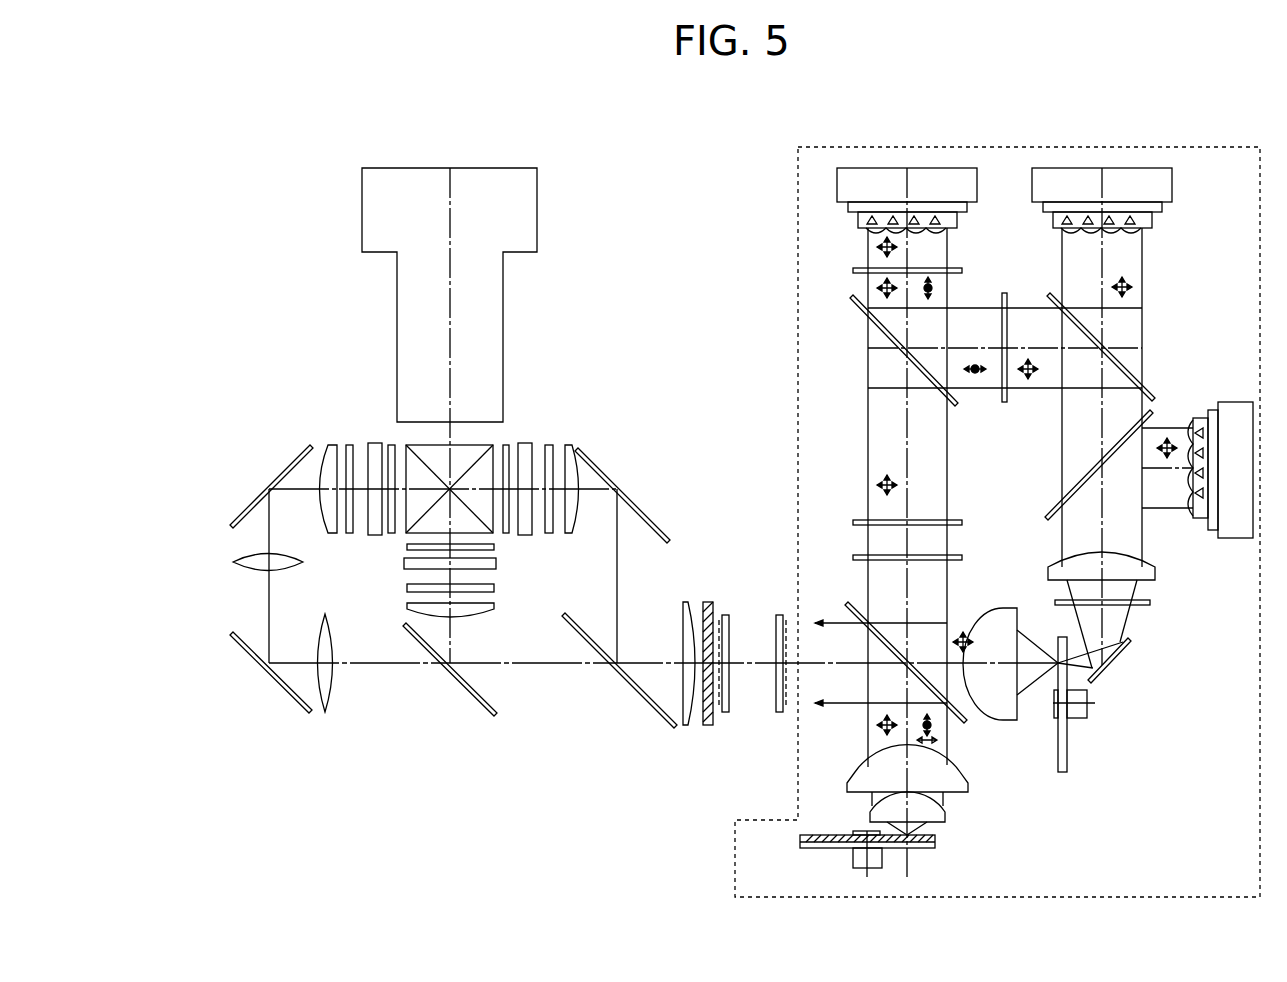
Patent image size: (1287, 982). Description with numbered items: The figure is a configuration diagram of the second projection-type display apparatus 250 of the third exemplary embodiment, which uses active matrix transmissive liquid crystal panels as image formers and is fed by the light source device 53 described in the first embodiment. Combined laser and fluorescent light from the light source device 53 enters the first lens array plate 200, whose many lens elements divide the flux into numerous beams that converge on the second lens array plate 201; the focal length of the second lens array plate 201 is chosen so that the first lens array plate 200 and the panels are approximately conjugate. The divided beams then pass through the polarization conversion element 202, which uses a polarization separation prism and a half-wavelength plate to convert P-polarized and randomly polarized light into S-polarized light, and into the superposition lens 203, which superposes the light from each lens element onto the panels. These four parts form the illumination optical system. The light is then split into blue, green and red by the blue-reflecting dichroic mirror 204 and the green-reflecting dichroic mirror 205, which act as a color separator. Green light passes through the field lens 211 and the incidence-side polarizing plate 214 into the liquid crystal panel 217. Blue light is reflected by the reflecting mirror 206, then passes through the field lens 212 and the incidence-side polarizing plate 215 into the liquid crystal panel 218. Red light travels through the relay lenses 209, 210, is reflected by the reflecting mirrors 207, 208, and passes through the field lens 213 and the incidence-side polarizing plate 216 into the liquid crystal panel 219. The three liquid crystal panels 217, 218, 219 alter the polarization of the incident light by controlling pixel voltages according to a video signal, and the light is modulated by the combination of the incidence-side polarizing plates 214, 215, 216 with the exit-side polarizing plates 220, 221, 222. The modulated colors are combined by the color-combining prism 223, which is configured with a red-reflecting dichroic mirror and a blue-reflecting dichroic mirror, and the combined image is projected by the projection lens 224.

The second projection-type display apparatus 250 is at (610, 135).
The light source device 53 is at (797, 348).
The projection lens 224 is at (362, 225).
The color-combining prism 223 is at (492, 445).
The exit-side polarizing plate 222 is at (392, 445).
The exit-side polarizing plate 221 is at (505, 535).
The exit-side polarizing plate 220 is at (405, 547).
The liquid crystal panel 219 is at (370, 445).
The liquid crystal panel 218 is at (522, 445).
The liquid crystal panel 217 is at (403, 563).
The incidence-side polarizing plate 216 is at (348, 445).
The incidence-side polarizing plate 215 is at (550, 445).
The incidence-side polarizing plate 214 is at (493, 588).
The field lens 213 is at (328, 445).
The field lens 212 is at (567, 533).
The field lens 211 is at (495, 608).
The relay lens 210 is at (237, 563).
The relay lens 209 is at (323, 713).
The reflecting mirror 208 is at (243, 510).
The reflecting mirror 207 is at (255, 657).
The reflecting mirror 206 is at (612, 477).
The green-reflecting dichroic mirror 205 is at (473, 695).
The blue-reflecting dichroic mirror 204 is at (632, 685).
The superposition lens 203 is at (683, 723).
The polarization conversion element 202 is at (707, 725).
The second lens array plate 201 is at (723, 713).
The first lens array plate 200 is at (778, 712).